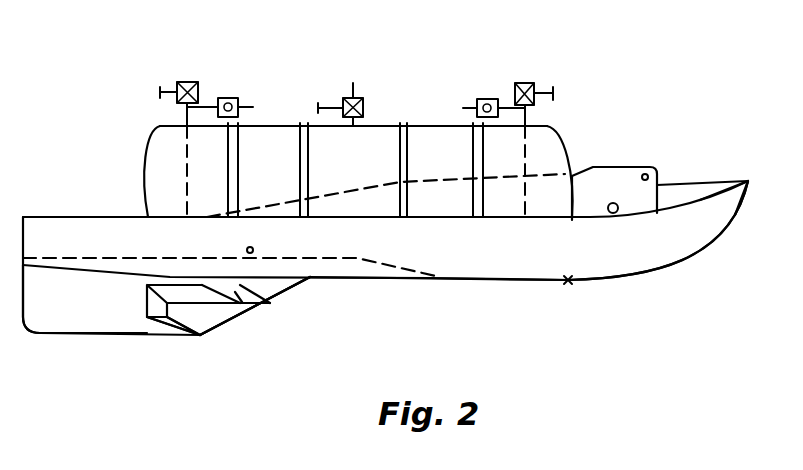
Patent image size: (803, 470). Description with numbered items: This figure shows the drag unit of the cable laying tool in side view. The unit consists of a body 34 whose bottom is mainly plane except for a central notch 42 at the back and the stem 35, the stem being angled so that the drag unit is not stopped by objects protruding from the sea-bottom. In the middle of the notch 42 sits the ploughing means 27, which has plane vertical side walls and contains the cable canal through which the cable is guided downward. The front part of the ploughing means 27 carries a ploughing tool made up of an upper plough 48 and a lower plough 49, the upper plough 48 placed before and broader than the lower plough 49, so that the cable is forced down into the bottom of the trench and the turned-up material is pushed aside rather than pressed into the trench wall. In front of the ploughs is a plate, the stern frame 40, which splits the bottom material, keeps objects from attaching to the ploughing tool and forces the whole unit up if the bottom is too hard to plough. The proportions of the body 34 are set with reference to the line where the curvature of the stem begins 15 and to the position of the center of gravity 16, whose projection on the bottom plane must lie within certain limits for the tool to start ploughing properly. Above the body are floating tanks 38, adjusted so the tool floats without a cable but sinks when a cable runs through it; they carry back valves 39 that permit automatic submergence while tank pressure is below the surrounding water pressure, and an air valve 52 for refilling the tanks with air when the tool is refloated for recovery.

The beginning of the curvature of the stem 15 is at (568, 282).
The center of gravity 16 is at (247, 248).
The ploughing means 27 is at (57, 312).
The body 34 is at (643, 257).
The stem 35 is at (723, 232).
The floating tanks 38 is at (440, 143).
The back valves 39 is at (187, 82).
The stern frame 40 is at (282, 283).
The central notch 42 is at (373, 270).
The upper plough 48 is at (257, 307).
The lower plough 49 is at (168, 320).
The air valve 52 is at (357, 86).